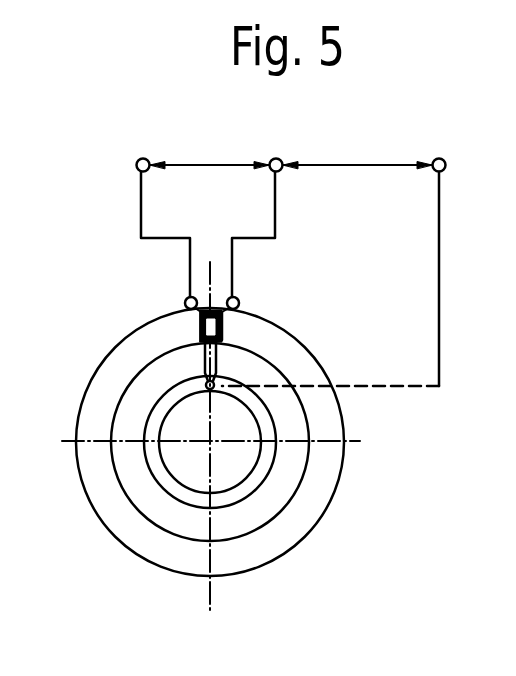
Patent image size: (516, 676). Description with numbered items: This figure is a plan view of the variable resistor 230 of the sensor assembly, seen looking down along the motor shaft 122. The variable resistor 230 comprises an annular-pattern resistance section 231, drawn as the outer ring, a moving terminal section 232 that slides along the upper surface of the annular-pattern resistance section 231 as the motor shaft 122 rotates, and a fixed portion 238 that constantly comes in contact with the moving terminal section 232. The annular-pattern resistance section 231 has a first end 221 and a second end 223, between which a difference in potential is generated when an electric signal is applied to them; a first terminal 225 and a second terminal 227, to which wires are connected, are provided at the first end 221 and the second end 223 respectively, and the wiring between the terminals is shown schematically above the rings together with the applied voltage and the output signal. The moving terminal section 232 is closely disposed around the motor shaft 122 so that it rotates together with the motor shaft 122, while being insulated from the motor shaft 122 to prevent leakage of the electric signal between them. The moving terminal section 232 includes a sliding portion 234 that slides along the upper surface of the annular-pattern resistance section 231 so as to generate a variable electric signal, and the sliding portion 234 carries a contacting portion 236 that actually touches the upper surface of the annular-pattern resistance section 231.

The variable resistor 230 is at (78, 180).
The annular-pattern resistance section 231 is at (160, 550).
The moving terminal section 232 is at (167, 486).
The motor shaft 122 is at (245, 432).
The first terminal 225 is at (187, 300).
The second terminal 227 is at (238, 298).
The first end 221 is at (199, 312).
The contacting portion 236 is at (200, 330).
The second end 223 is at (224, 334).
The sliding portion 234 is at (204, 358).
The fixed portion 238 is at (204, 390).